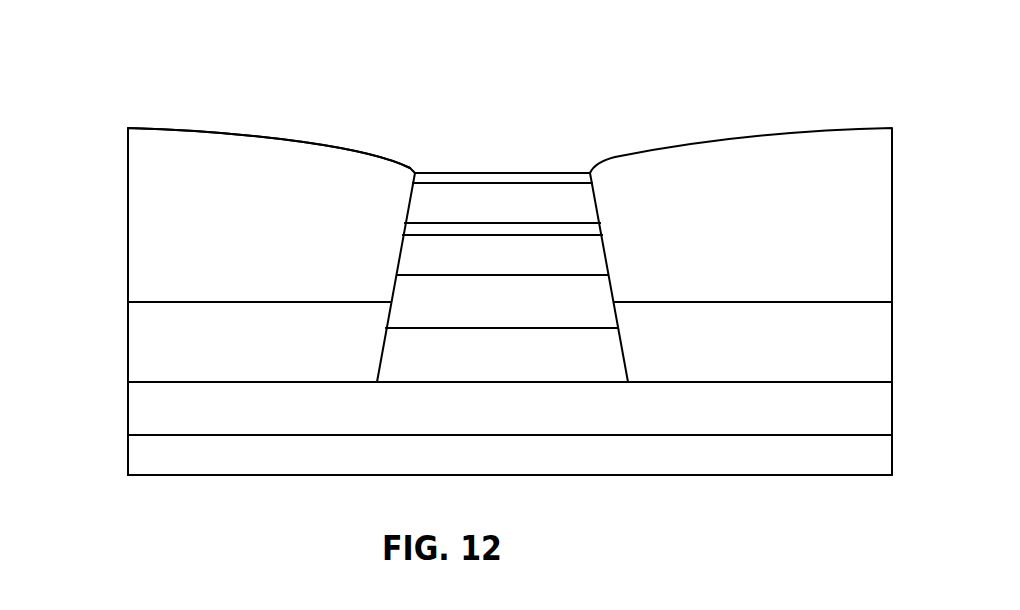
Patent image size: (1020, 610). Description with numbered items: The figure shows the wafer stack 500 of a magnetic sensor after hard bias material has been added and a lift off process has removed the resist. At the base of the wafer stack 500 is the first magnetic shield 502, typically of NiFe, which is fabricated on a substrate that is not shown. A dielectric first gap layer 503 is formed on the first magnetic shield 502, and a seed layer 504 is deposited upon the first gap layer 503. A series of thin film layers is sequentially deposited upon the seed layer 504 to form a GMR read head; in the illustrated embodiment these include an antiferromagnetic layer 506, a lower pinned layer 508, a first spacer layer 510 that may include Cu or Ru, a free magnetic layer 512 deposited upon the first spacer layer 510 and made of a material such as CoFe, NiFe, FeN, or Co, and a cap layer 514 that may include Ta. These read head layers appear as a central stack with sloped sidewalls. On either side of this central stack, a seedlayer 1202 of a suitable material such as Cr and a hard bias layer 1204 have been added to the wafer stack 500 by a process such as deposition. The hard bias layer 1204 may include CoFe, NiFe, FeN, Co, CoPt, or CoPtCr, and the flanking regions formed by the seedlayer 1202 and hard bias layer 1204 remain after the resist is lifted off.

The wafer stack 500 is at (145, 105).
The first magnetic shield 502 is at (128, 452).
The first gap layer 503 is at (128, 404).
The seed layer 504 is at (380, 350).
The antiferromagnetic layer 506 is at (394, 292).
The lower pinned layer 508 is at (399, 264).
The first spacer layer 510 is at (404, 231).
The free magnetic layer 512 is at (410, 203).
The cap layer 514 is at (413, 178).
The seedlayer 1202 is at (128, 336).
The hard bias layer 1204 is at (128, 228).